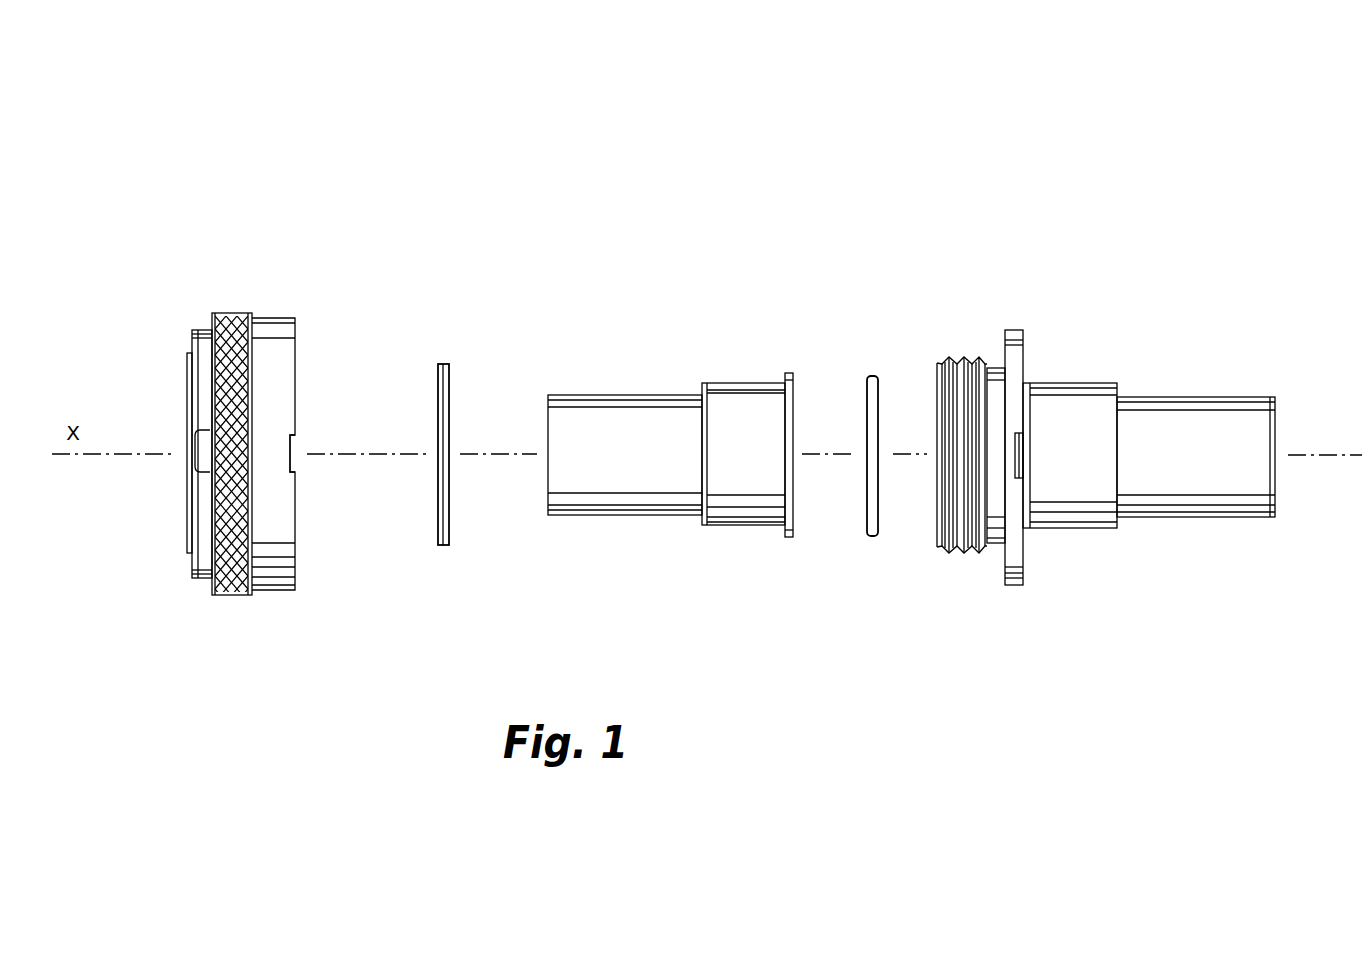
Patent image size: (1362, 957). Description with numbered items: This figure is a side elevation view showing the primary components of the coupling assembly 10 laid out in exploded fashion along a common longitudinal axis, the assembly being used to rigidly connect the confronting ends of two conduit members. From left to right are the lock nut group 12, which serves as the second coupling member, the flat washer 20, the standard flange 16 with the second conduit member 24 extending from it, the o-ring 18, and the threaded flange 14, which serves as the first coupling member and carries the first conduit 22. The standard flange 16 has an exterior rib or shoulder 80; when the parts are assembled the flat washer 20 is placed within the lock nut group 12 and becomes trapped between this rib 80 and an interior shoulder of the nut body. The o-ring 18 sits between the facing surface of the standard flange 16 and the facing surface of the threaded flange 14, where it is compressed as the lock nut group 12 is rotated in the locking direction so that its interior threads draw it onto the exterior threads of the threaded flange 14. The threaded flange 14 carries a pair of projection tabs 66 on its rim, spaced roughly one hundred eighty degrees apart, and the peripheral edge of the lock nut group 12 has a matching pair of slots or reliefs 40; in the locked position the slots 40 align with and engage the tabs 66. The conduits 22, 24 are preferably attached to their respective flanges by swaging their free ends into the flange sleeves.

The coupling assembly 10 is at (648, 213).
The lock nut group 12 is at (235, 280).
The threaded flange 14 is at (1015, 303).
The standard flange 16 is at (727, 318).
The o-ring 18 is at (882, 350).
The flat washer 20 is at (438, 337).
The first conduit 22 is at (1235, 405).
The second conduit member 24 is at (631, 422).
The slots 40 is at (293, 448).
The projection tabs 66 is at (1013, 455).
The rib 80 is at (785, 383).